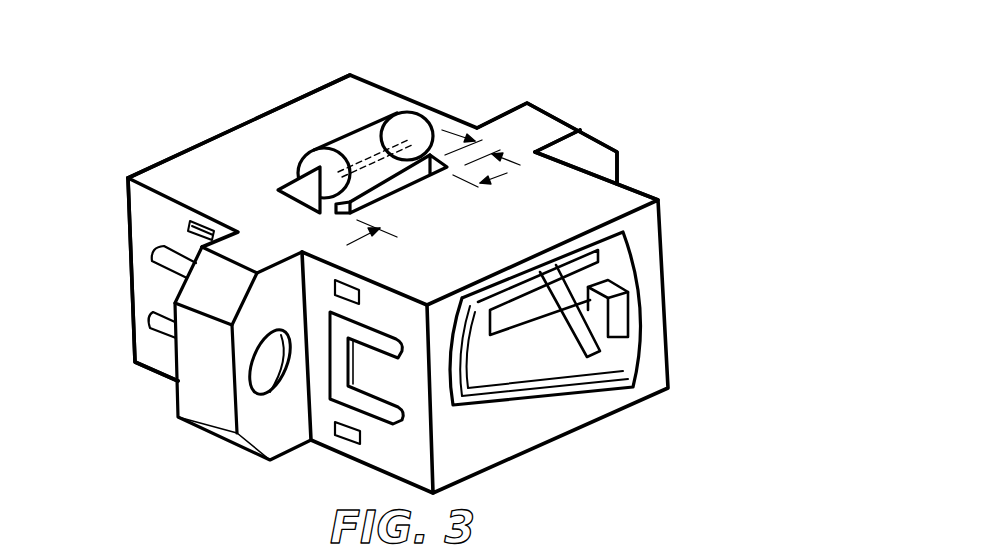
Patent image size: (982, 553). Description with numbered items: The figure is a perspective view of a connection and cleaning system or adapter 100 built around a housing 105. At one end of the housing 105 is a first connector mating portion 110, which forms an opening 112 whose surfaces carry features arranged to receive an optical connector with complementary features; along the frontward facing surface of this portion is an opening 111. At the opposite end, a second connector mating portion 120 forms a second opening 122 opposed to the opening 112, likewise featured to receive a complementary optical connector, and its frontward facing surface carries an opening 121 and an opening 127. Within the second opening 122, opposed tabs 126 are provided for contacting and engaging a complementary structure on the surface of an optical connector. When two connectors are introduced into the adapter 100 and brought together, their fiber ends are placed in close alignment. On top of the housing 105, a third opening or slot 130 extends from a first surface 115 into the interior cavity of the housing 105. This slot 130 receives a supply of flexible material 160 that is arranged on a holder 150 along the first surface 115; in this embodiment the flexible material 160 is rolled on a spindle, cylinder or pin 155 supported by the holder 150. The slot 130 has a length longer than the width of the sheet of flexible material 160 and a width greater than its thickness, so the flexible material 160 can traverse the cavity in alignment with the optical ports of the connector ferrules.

The adapter 100 is at (370, 248).
The housing 105 is at (128, 236).
The first connector mating portion 110 is at (207, 462).
The opening 111 is at (198, 221).
The opening 112 is at (210, 108).
The first surface 115 is at (558, 216).
The second connector mating portion 120 is at (697, 172).
The opening 121 is at (358, 283).
The second opening 122 is at (648, 443).
The opposed tabs 126 is at (548, 327).
The opening 127 is at (350, 445).
The third opening or slot 130 is at (320, 222).
The holder 150 is at (298, 176).
The spindle, cylinder or pin 155 is at (361, 130).
The supply of flexible material 160 is at (409, 116).